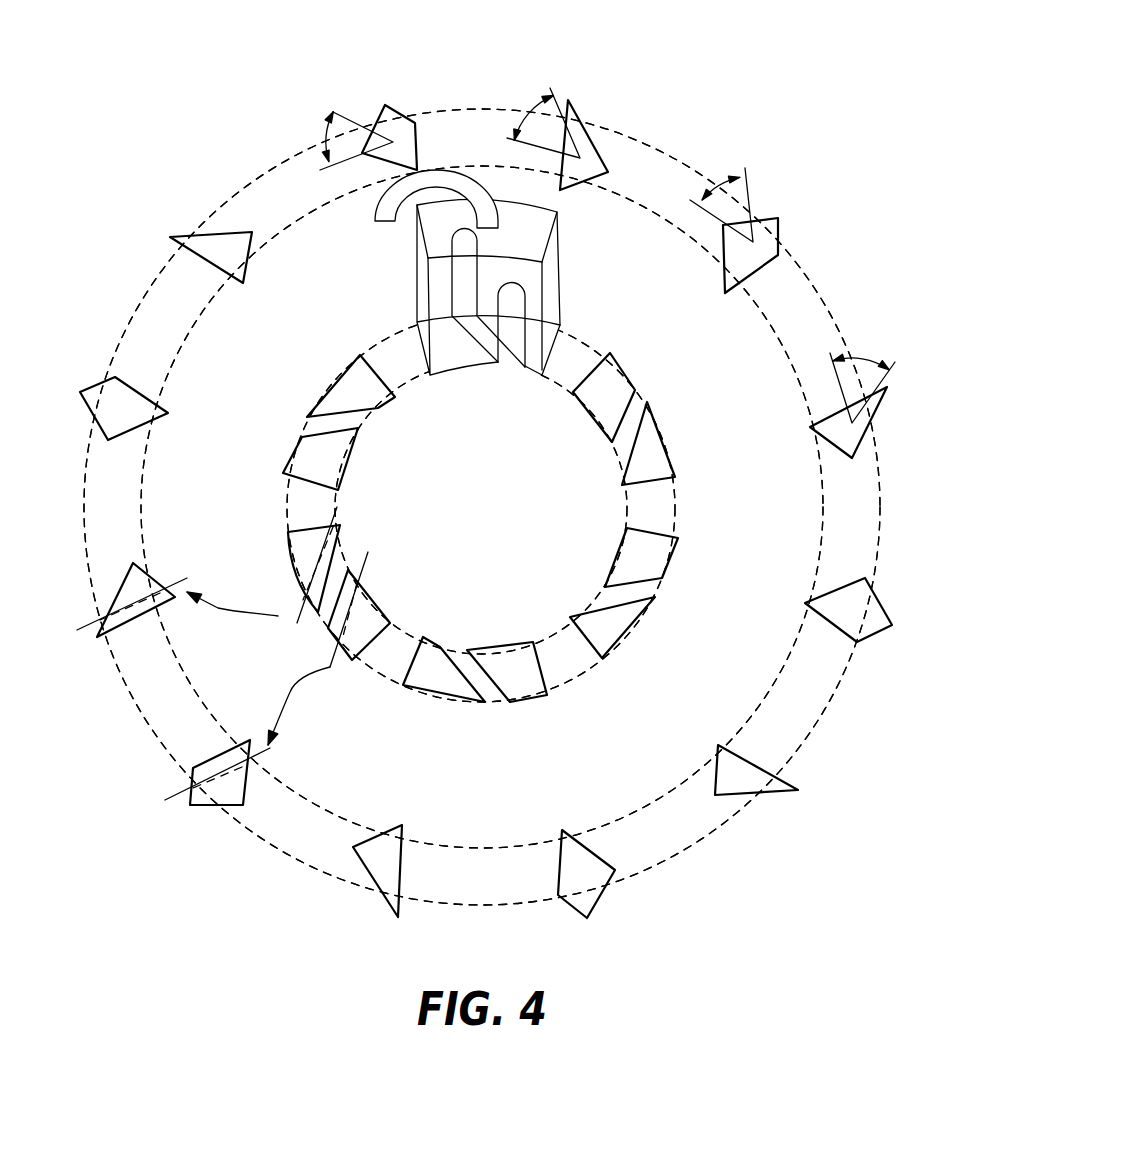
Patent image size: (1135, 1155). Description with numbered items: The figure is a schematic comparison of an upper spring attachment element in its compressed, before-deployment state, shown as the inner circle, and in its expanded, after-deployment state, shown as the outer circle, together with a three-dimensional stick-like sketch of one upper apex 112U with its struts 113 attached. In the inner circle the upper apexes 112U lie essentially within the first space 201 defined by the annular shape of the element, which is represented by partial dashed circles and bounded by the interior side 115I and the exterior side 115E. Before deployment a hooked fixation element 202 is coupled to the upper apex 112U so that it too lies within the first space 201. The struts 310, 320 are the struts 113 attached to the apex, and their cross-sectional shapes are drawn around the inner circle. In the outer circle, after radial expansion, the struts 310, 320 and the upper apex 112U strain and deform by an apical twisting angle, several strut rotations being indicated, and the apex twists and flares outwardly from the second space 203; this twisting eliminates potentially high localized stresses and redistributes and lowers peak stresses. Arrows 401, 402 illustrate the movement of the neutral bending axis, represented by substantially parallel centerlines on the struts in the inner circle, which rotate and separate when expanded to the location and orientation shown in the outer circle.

The first space 201 is at (660, 497).
The second space 203 is at (858, 495).
The hooked fixation element 202 is at (467, 172).
The upper apex 112U is at (540, 222).
The struts 113 is at (493, 290).
The strut 310 is at (550, 283).
The strut 320 is at (433, 287).
The interior side 115I is at (545, 637).
The exterior side 115E is at (580, 673).
The arrow 401 is at (218, 608).
The arrow 402 is at (290, 692).